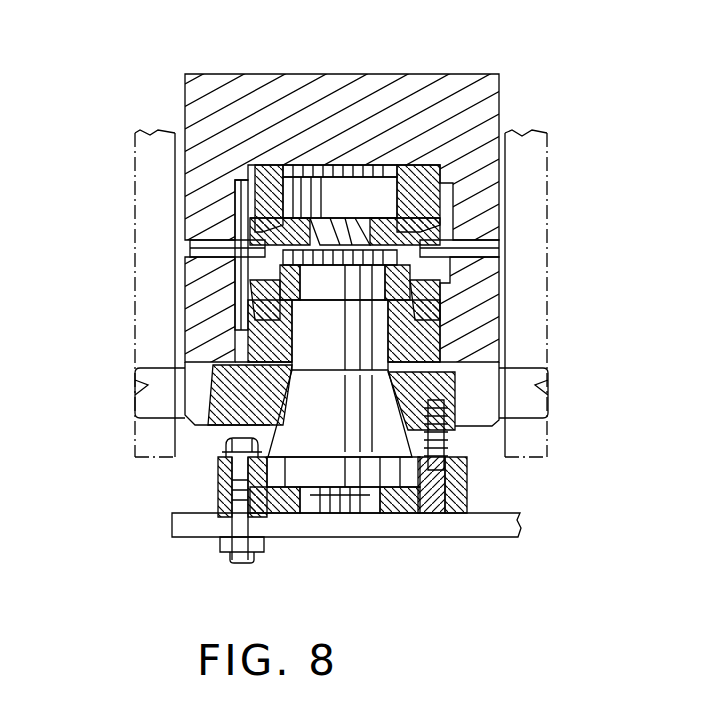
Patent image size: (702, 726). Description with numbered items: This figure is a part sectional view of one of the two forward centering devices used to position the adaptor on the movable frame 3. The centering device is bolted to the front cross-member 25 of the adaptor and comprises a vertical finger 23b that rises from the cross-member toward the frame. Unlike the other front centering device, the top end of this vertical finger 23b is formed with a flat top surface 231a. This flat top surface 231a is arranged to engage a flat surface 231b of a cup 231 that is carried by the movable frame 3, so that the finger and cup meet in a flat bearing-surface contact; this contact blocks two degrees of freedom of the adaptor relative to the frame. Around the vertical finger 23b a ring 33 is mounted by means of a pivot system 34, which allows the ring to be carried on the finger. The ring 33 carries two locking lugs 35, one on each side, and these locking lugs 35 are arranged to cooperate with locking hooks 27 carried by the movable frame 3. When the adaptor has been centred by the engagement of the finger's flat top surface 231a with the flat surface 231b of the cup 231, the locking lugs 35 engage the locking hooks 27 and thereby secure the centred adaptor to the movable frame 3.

The movable frame 3 is at (440, 75).
The locking hooks 27 is at (155, 150).
The cup 231 is at (242, 222).
The flat top surface 231a is at (232, 255).
The flat surface 231b is at (497, 242).
The vertical finger 23b is at (420, 285).
The pivot system 34 is at (294, 316).
The locking lugs 35 is at (133, 408).
The ring 33 is at (208, 432).
The front cross-member 25 is at (315, 520).